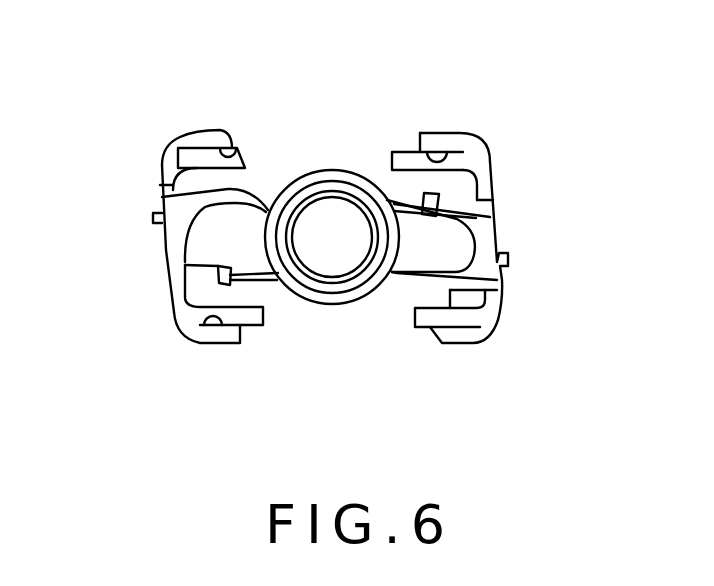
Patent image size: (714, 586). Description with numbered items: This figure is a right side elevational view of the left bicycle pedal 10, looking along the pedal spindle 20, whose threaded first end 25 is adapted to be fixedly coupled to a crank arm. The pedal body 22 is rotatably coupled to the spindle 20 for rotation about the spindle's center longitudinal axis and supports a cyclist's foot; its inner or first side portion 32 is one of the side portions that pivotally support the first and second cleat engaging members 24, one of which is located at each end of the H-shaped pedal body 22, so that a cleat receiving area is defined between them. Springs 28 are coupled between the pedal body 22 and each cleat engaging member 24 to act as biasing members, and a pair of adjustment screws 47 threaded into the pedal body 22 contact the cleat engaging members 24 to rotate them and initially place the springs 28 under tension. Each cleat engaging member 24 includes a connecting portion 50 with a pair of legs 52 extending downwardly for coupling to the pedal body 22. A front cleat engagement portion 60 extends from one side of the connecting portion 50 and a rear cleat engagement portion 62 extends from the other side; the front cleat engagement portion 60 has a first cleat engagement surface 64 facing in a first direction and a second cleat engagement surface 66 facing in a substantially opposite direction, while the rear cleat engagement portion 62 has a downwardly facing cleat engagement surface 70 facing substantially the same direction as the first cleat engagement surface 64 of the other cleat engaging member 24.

The bicycle pedal 10 is at (358, 98).
The pedal spindle 20 is at (320, 177).
The pedal body 22 is at (400, 272).
The cleat engaging member 24 is at (157, 188).
The first end 25 is at (332, 279).
The spring 28 is at (478, 207).
The first side portion 32 is at (202, 245).
The adjustment screw 47 is at (397, 193).
The connecting portion 50 is at (493, 190).
The leg 52 is at (198, 190).
The front cleat engagement portion 60 is at (447, 132).
The rear cleat engagement portion 62 is at (207, 130).
The first cleat engagement surface 64 is at (467, 147).
The second cleat engagement surface 66 is at (405, 148).
The cleat engagement surface 70 is at (234, 152).